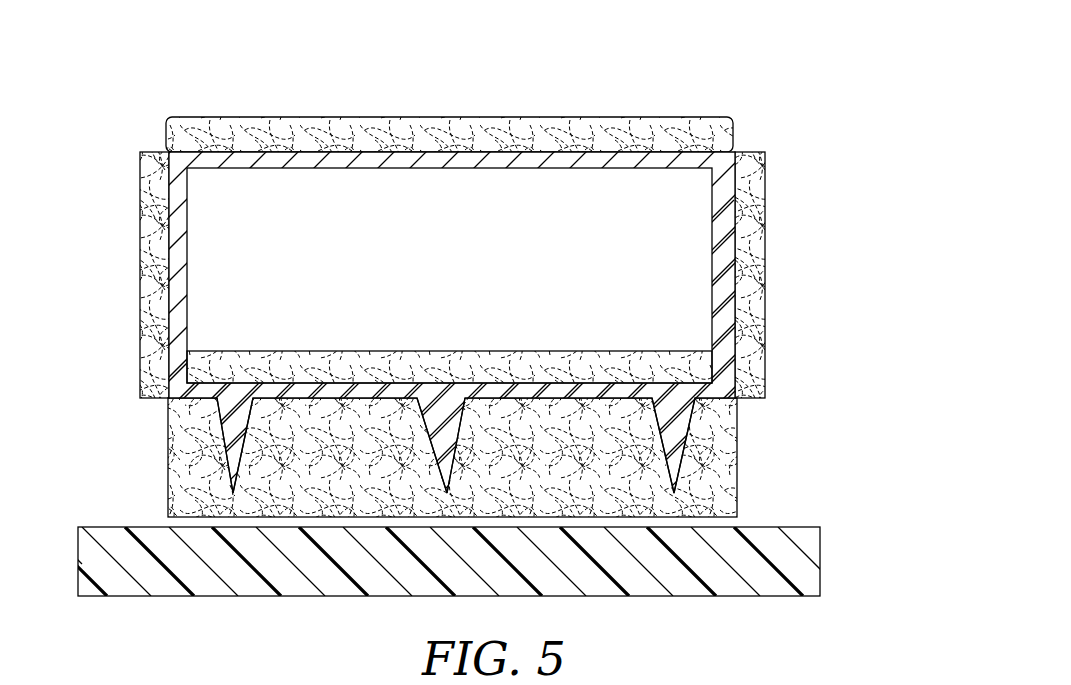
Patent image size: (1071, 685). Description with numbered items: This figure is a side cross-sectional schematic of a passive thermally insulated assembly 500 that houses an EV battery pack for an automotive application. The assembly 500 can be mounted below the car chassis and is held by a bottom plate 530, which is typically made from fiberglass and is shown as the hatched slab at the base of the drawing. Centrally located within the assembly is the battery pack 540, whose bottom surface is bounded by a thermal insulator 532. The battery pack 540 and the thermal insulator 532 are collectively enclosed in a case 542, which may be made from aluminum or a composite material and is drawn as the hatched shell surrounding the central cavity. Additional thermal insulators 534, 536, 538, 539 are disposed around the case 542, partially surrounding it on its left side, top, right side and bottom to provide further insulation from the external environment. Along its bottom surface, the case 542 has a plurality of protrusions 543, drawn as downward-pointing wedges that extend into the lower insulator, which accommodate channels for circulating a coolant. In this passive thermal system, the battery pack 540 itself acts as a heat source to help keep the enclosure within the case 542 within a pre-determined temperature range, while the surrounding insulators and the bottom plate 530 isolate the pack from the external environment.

The passive thermally insulated assembly 500 is at (727, 44).
The bottom plate 530 is at (798, 565).
The thermal insulator 532 is at (692, 372).
The thermal insulator 534 is at (150, 250).
The thermal insulator 536 is at (408, 130).
The thermal insulator 538 is at (752, 255).
The thermal insulator 539 is at (715, 448).
The battery pack 540 is at (558, 207).
The case 542 is at (272, 157).
The protrusions 543 is at (432, 455).